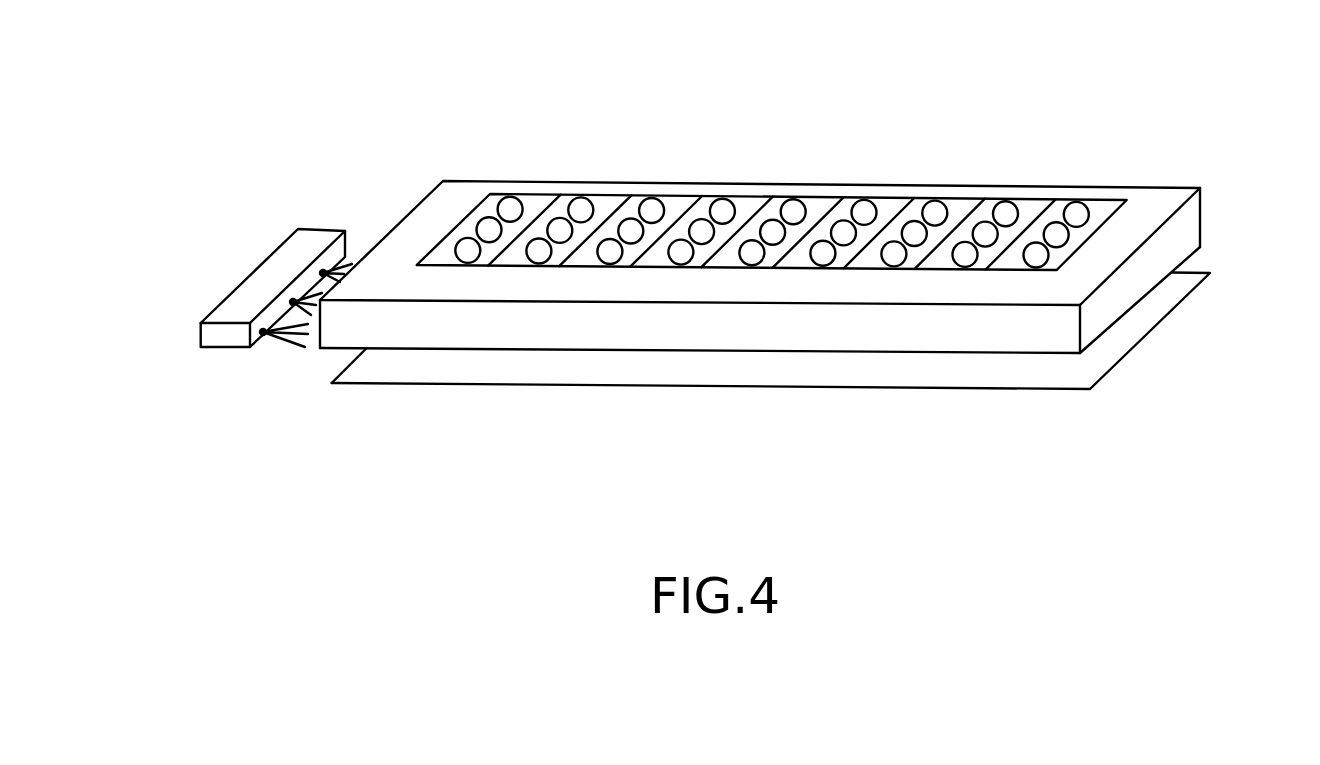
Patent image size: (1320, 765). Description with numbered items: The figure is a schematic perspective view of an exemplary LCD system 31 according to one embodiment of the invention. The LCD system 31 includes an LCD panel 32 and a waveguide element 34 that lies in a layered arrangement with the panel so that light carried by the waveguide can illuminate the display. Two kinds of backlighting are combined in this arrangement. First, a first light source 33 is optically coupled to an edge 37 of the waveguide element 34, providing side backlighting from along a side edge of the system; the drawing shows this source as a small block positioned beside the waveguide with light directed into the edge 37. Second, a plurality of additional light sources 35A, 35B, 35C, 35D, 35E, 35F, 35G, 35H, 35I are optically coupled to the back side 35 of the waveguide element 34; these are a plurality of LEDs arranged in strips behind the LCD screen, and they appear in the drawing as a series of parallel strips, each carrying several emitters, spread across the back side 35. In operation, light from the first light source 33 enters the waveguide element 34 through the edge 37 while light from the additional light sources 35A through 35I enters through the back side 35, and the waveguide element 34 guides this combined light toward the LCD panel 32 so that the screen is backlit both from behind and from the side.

The LCD system 31 is at (463, 130).
The LCD panel 32 is at (630, 385).
The first light source 33 is at (215, 265).
The waveguide element 34 is at (1031, 353).
The back side of the waveguide element 35 is at (1165, 200).
The additional light source 35A is at (1093, 200).
The additional light source 35B is at (1020, 199).
The additional light source 35C is at (950, 198).
The additional light source 35D is at (863, 198).
The additional light source 35E is at (797, 197).
The additional light source 35F is at (737, 196).
The additional light source 35G is at (678, 196).
The additional light source 35H is at (603, 195).
The additional light source 35I is at (523, 194).
The edge of the waveguide element 37 is at (318, 338).